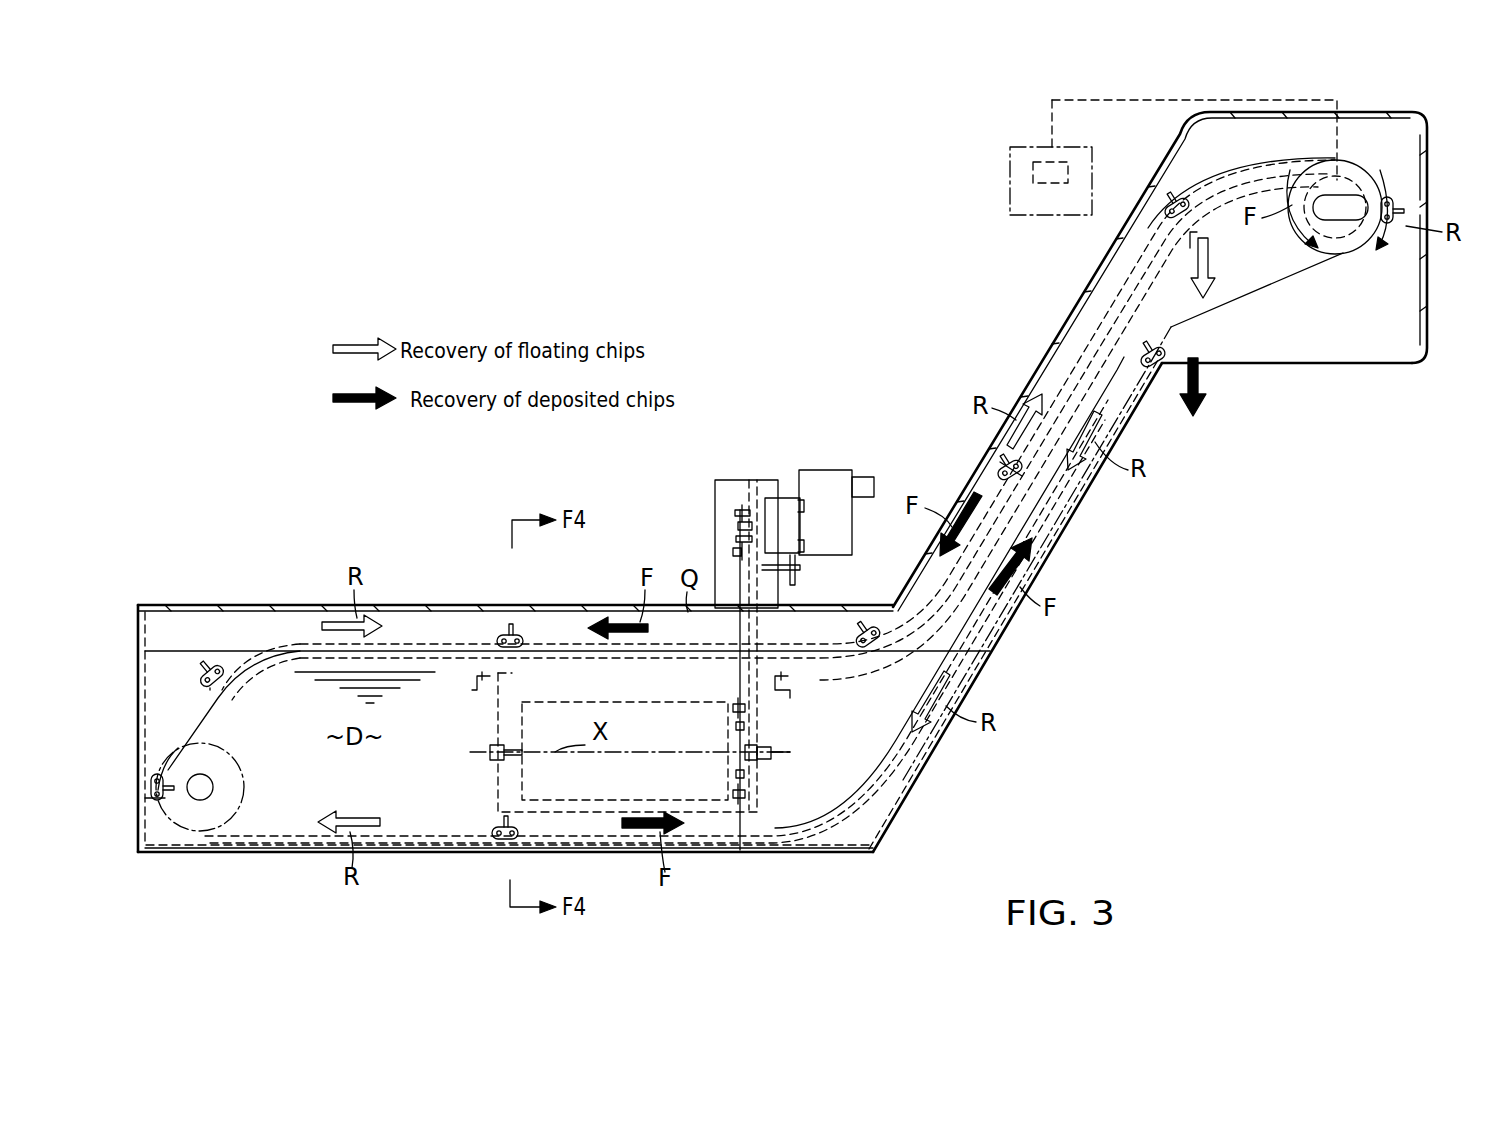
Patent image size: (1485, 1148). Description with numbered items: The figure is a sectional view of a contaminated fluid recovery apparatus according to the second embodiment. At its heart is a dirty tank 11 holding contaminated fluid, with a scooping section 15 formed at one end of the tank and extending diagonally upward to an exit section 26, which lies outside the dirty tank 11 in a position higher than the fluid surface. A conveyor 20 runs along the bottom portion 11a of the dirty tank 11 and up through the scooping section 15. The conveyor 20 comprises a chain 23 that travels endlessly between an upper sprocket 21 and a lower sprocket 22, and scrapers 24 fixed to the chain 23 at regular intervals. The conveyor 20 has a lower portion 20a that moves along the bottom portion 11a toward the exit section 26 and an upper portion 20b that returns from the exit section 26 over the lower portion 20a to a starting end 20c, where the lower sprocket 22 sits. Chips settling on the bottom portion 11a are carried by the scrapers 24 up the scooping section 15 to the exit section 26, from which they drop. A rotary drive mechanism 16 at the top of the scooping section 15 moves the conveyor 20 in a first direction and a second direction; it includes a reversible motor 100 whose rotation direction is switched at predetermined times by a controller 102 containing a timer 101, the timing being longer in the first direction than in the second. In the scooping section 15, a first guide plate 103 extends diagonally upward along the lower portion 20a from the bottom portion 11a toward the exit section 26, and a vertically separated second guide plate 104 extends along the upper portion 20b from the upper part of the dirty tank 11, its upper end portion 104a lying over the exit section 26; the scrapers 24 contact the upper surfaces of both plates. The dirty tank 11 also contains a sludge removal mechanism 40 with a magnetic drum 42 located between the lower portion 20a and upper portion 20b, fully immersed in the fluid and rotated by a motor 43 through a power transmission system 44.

The dirty tank 11 is at (460, 605).
The bottom portion 11a is at (438, 850).
The scooping section 15 is at (1055, 562).
The rotary drive mechanism 16 is at (1364, 156).
The conveyor 20 is at (424, 630).
The lower portion 20a is at (612, 848).
The upper portion 20b is at (565, 645).
The starting end 20c is at (195, 833).
The upper sprocket 21 is at (1370, 258).
The lower sprocket 22 is at (170, 808).
The chain 23 is at (1006, 458).
The scrapers 24 is at (505, 630).
The exit section 26 is at (1322, 365).
The sludge removal mechanism 40 is at (756, 820).
The magnetic drum 42 is at (575, 702).
The motor 43 is at (826, 470).
The power transmission system 44 is at (733, 541).
The reversible motor 100 is at (1318, 178).
The timer 101 is at (1063, 185).
The controller 102 is at (1010, 205).
The first guide plate 103 is at (1093, 506).
The second guide plate 104 is at (1070, 544).
The upper end portion 104a is at (1218, 236).